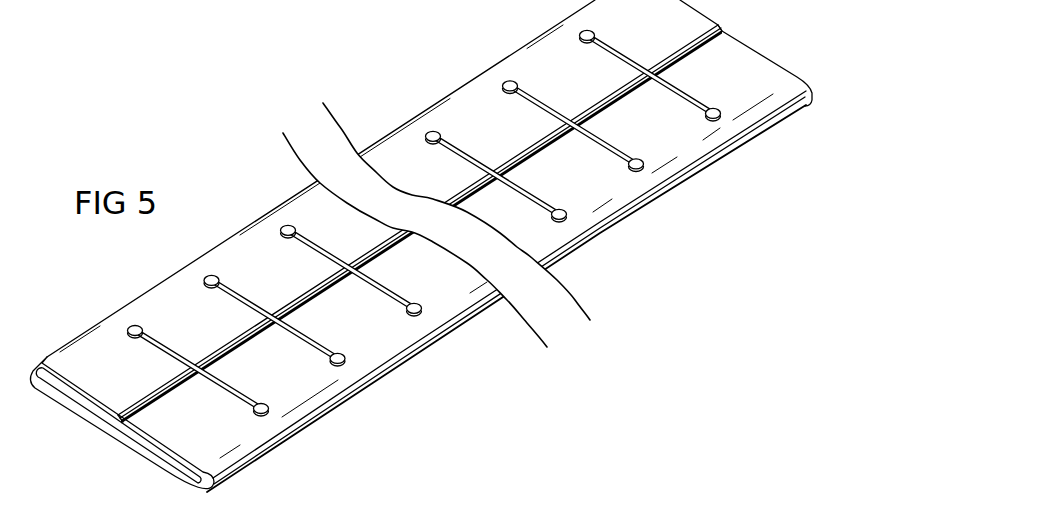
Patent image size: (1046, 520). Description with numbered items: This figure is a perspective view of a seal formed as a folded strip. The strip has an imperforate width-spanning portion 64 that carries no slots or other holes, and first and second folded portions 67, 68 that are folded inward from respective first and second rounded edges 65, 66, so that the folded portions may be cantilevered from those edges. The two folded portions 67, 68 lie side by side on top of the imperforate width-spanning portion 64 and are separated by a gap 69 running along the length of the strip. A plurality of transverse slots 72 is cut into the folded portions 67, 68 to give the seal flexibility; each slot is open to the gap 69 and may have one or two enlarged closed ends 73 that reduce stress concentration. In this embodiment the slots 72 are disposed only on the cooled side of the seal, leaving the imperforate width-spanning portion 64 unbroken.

The imperforate width-spanning portion 64 is at (100, 427).
The first rounded edge 65 is at (72, 341).
The second rounded edge 66 is at (258, 455).
The first folded portion 67 is at (132, 376).
The second folded portion 68 is at (215, 433).
The gap 69 is at (227, 343).
The transverse slots 72 is at (235, 384).
The enlarged closed ends 73 is at (343, 352).